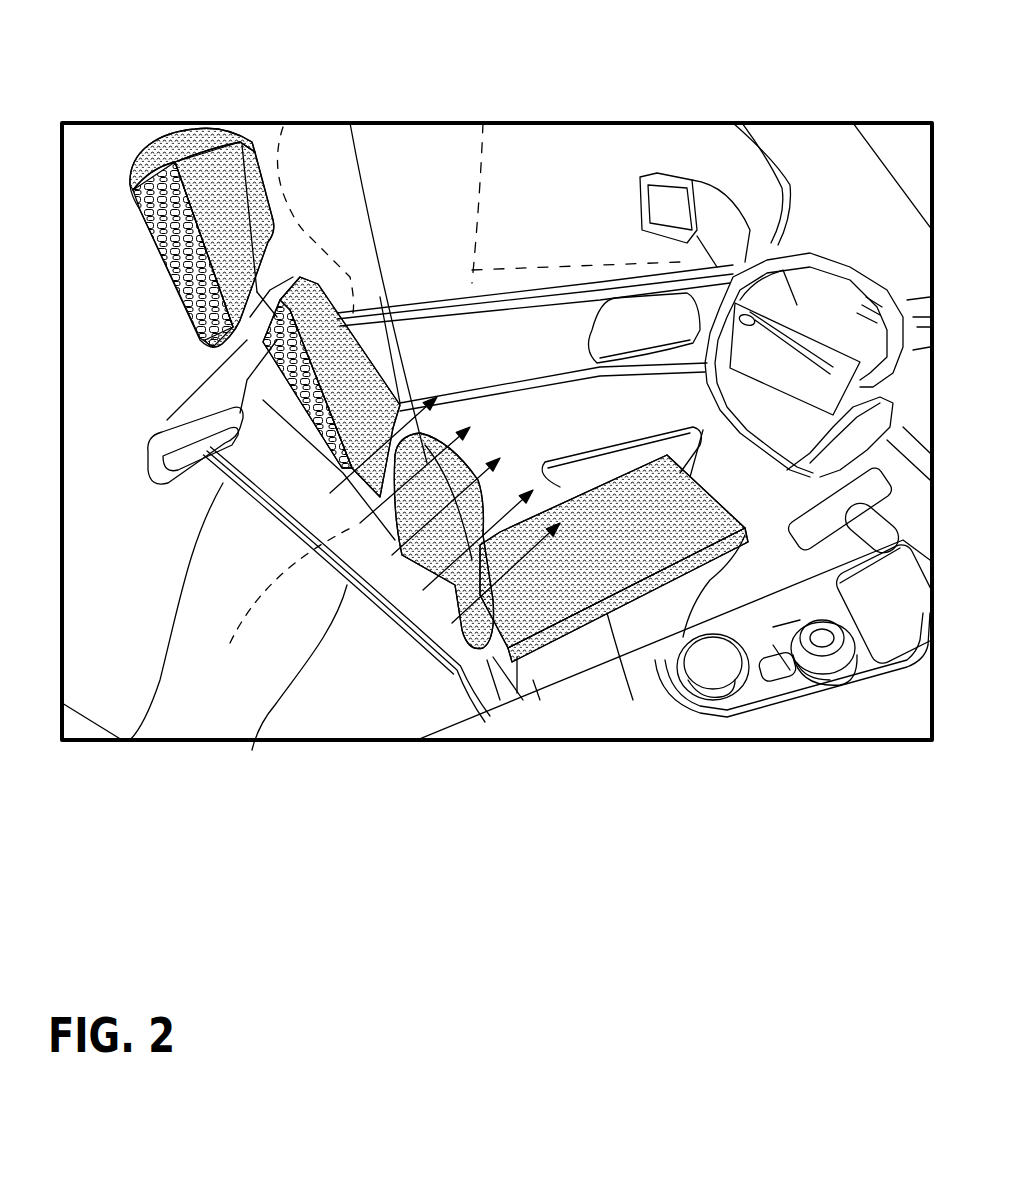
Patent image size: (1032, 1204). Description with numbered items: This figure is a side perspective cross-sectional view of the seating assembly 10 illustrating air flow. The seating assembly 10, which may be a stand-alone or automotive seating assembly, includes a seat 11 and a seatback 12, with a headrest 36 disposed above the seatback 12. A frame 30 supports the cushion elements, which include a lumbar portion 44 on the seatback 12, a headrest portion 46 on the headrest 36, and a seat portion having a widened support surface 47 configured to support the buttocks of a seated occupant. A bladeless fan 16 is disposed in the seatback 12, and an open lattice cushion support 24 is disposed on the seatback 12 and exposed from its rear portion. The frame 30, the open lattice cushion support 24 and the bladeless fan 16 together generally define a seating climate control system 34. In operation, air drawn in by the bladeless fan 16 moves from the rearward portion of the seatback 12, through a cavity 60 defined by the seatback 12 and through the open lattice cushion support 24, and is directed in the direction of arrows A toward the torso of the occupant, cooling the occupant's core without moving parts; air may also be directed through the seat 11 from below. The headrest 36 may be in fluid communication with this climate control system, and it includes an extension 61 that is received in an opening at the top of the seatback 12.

The seating assembly 10 is at (560, 103).
The seat 11 is at (655, 603).
The seatback 12 is at (313, 500).
The bladeless fan 16 is at (252, 750).
The open lattice cushion support 24 is at (152, 196).
The frame 30 is at (227, 350).
The seating climate control system 34 is at (115, 492).
The headrest 36 is at (236, 170).
The lumbar portion 44 is at (420, 563).
The headrest portion 46 is at (167, 270).
The widened support surface 47 is at (590, 603).
The cavity 60 is at (281, 599).
The extension 61 is at (263, 292).
The arrows A is at (578, 556).